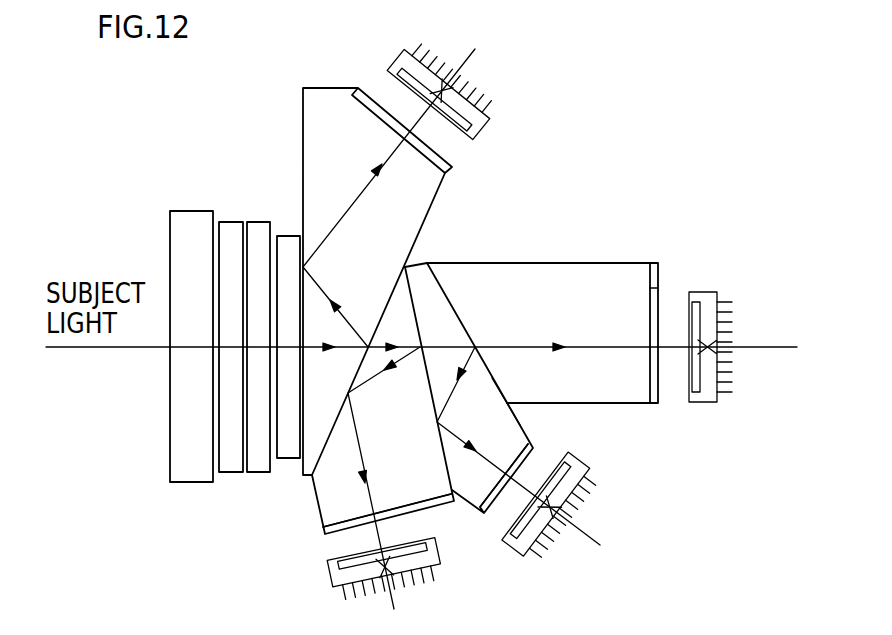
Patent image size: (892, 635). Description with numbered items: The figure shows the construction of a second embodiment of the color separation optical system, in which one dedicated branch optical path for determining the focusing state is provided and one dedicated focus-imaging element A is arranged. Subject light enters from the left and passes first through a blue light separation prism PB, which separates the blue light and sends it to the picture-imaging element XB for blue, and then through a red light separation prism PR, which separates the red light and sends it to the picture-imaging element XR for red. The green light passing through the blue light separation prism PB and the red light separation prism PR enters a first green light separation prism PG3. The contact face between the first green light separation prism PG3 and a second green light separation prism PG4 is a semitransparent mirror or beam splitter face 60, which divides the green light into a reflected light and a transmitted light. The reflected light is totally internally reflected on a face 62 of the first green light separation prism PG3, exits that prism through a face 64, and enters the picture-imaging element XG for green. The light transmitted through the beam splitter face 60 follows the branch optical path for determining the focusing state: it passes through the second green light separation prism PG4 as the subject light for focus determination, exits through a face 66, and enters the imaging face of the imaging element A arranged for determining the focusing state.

The blue light separation prism PB is at (325, 175).
The red light separation prism PR is at (340, 492).
The first green light separation prism PG3 is at (430, 308).
The second green light separation prism PG4 is at (555, 295).
The beam splitter face 60 is at (490, 377).
The face of the first green light separation prism 62 is at (458, 497).
The face of the first green light separation prism 64 is at (525, 462).
The face of the second green light separation prism 66 is at (658, 288).
The picture-imaging element for blue XB is at (405, 63).
The picture-imaging element for green XG is at (573, 472).
The picture-imaging element for red XR is at (425, 557).
The focus-imaging element A is at (706, 400).